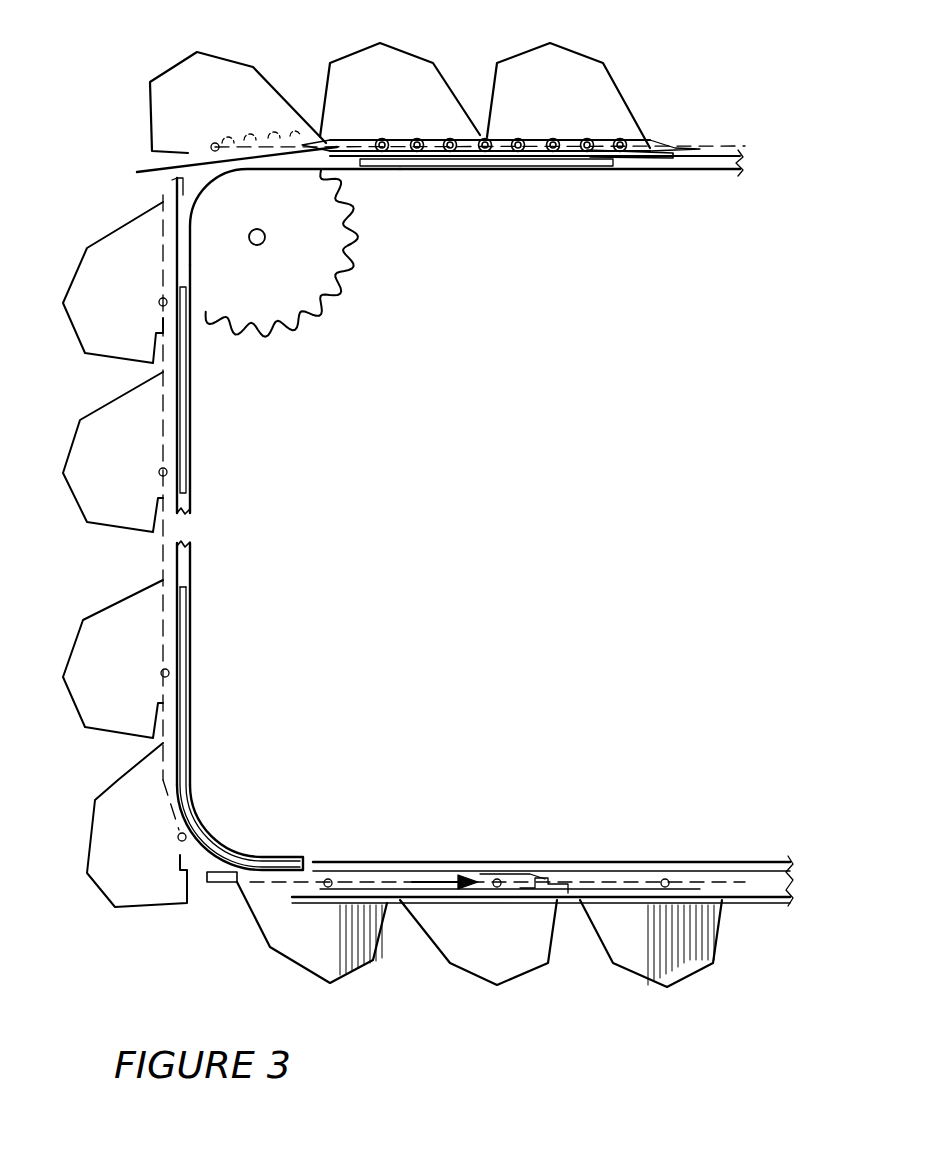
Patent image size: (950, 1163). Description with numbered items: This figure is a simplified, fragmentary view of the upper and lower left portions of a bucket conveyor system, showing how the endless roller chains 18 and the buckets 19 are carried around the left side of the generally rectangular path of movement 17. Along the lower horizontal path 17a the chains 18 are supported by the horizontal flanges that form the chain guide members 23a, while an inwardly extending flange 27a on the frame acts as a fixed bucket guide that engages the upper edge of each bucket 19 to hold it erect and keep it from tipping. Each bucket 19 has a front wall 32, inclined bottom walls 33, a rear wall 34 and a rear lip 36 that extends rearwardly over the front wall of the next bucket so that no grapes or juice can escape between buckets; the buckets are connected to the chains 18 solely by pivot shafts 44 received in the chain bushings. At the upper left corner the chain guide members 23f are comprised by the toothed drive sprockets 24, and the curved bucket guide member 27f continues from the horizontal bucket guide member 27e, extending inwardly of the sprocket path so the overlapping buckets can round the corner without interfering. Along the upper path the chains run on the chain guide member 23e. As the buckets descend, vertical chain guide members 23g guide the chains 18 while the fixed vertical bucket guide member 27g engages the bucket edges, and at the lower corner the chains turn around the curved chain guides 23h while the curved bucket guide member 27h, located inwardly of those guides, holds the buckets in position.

The path of movement 17 is at (433, 878).
The lower horizontal path 17a is at (757, 880).
The endless roller chain 18 is at (532, 139).
The bucket 19 is at (410, 70).
The chain guide member 23a is at (460, 898).
The chain guide member 23e is at (500, 161).
The chain guide member 23f is at (213, 171).
The vertical chain guide member 23g is at (188, 448).
The curved chain guide 23h is at (190, 793).
The toothed sprocket 24 is at (318, 241).
The inwardly extending flange 27a is at (482, 863).
The horizontal bucket guide member 27e is at (683, 171).
The curved bucket guide member 27f is at (207, 190).
The vertical bucket guide member 27g is at (183, 555).
The curved bucket guide member 27h is at (227, 842).
The front wall 32 is at (387, 947).
The inclined bottom wall 33 is at (355, 983).
The rear wall 34 is at (270, 950).
The rear lip 36 is at (222, 883).
The pivot shaft 44 is at (558, 140).